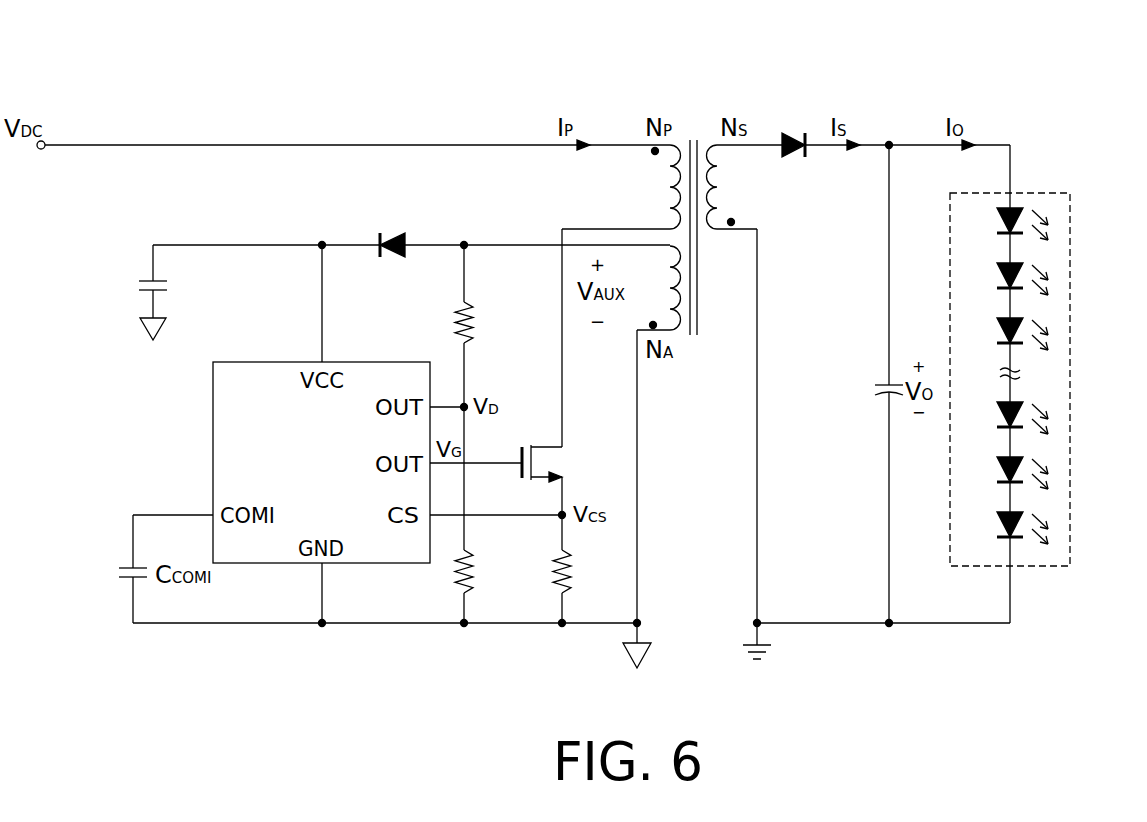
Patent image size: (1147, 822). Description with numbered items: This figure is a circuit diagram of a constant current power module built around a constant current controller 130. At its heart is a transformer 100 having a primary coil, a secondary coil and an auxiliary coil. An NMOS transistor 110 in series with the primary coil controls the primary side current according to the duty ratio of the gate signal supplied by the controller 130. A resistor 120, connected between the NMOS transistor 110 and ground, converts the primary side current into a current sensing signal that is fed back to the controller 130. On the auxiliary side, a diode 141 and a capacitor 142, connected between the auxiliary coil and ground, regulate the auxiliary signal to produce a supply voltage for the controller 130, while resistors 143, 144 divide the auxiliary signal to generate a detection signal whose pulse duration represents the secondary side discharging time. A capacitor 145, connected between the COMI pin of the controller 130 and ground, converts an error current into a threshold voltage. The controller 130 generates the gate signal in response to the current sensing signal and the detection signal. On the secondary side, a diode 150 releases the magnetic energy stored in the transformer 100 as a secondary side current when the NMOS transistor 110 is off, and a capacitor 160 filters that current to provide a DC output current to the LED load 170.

The transformer 100 is at (690, 130).
The NMOS transistor 110 is at (560, 455).
The resistor 120 is at (552, 567).
The constant current controller 130 is at (262, 362).
The diode 141 is at (392, 234).
The capacitor 142 is at (138, 284).
The resistor 143 is at (478, 318).
The resistor 144 is at (455, 575).
The capacitor 145 is at (131, 566).
The diode 150 is at (796, 133).
The capacitor 160 is at (882, 384).
The LED load 170 is at (1060, 193).